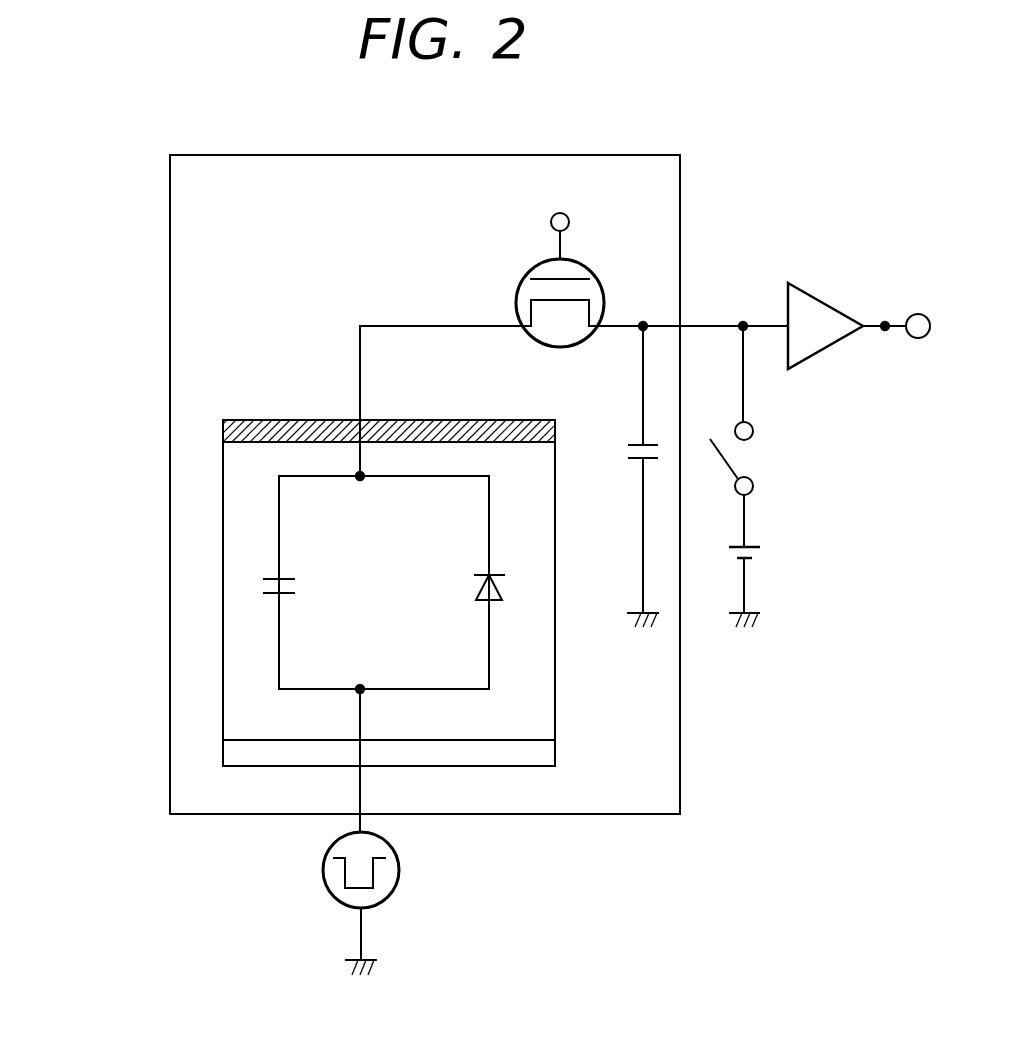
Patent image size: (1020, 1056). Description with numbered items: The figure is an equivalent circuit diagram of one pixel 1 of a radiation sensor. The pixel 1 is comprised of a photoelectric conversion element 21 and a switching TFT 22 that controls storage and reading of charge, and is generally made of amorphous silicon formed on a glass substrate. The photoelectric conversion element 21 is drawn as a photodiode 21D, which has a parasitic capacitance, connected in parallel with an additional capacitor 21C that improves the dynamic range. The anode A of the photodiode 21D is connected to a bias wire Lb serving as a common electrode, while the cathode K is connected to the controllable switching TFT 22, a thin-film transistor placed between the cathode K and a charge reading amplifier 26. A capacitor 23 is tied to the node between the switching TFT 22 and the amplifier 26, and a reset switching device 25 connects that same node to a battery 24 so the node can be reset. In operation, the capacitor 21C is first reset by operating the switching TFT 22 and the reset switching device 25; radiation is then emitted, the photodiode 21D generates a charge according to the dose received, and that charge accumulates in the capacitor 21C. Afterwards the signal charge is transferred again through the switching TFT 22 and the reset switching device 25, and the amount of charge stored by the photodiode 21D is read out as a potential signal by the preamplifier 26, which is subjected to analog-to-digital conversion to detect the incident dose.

The pixel 1 is at (138, 615).
The photoelectric conversion element 21 is at (440, 420).
The capacitor 21C is at (300, 586).
The photodiode 21D is at (478, 585).
The switching TFT 22 is at (530, 285).
The capacitor 23 is at (622, 450).
The battery (DC power source) 24 is at (764, 552).
The reset switching device 25 is at (757, 458).
The charge reading amplifier 26 is at (822, 310).
The cathode K is at (424, 401).
The anode A is at (374, 760).
The bias wire Lb is at (358, 820).